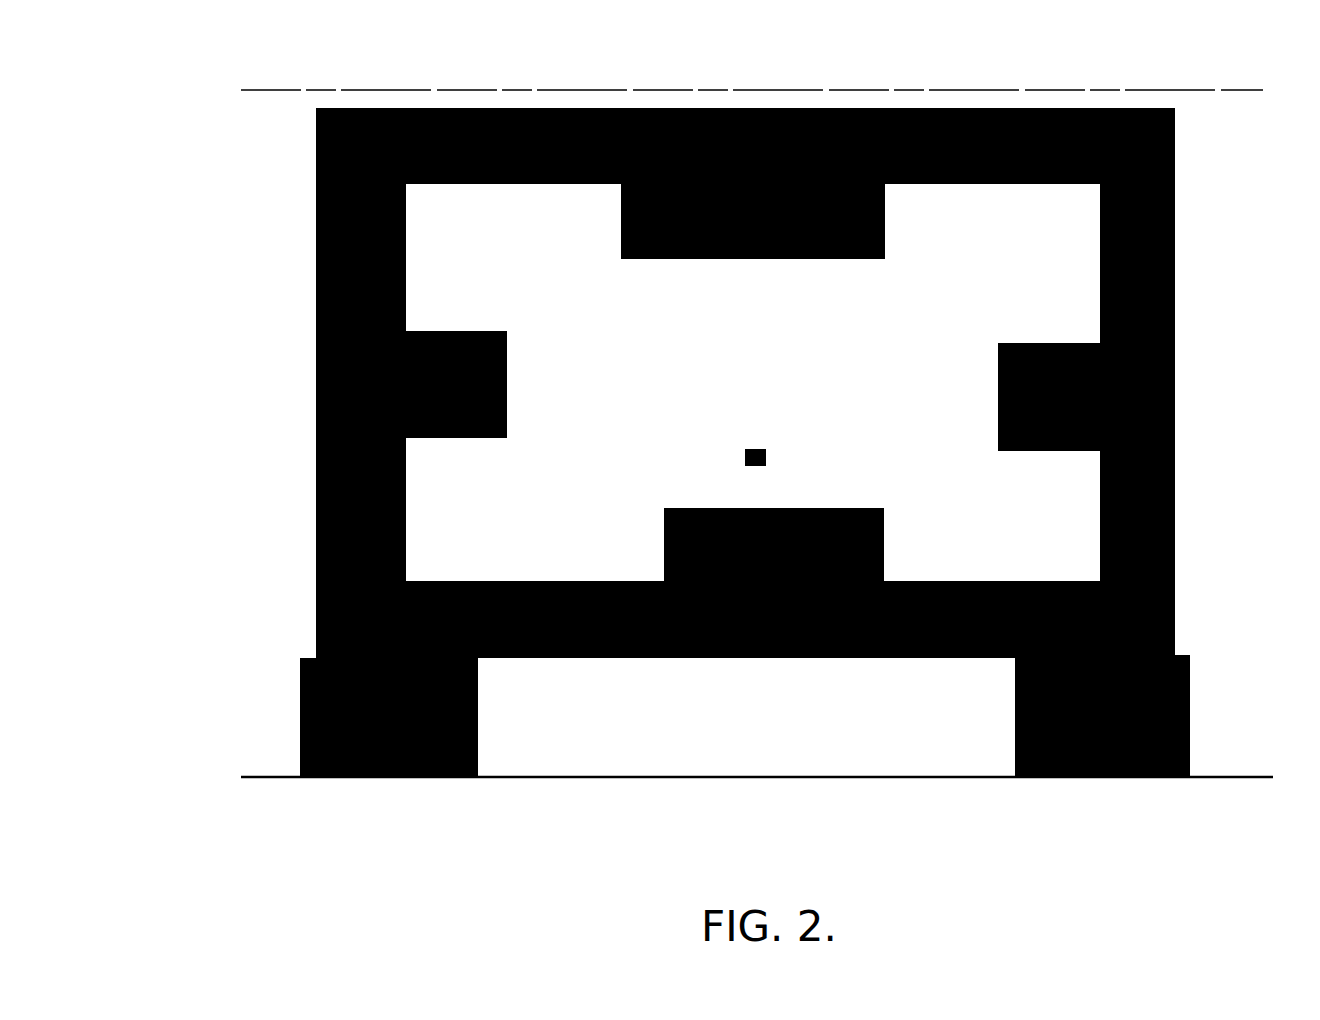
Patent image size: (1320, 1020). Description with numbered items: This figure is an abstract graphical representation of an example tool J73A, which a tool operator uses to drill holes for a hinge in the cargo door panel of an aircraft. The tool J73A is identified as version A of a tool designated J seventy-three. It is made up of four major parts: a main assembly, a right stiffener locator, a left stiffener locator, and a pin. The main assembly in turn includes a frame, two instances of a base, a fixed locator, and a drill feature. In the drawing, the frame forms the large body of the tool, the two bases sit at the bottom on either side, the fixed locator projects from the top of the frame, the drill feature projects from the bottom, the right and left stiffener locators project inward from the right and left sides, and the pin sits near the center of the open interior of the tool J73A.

The tool J73A is at (1177, 108).